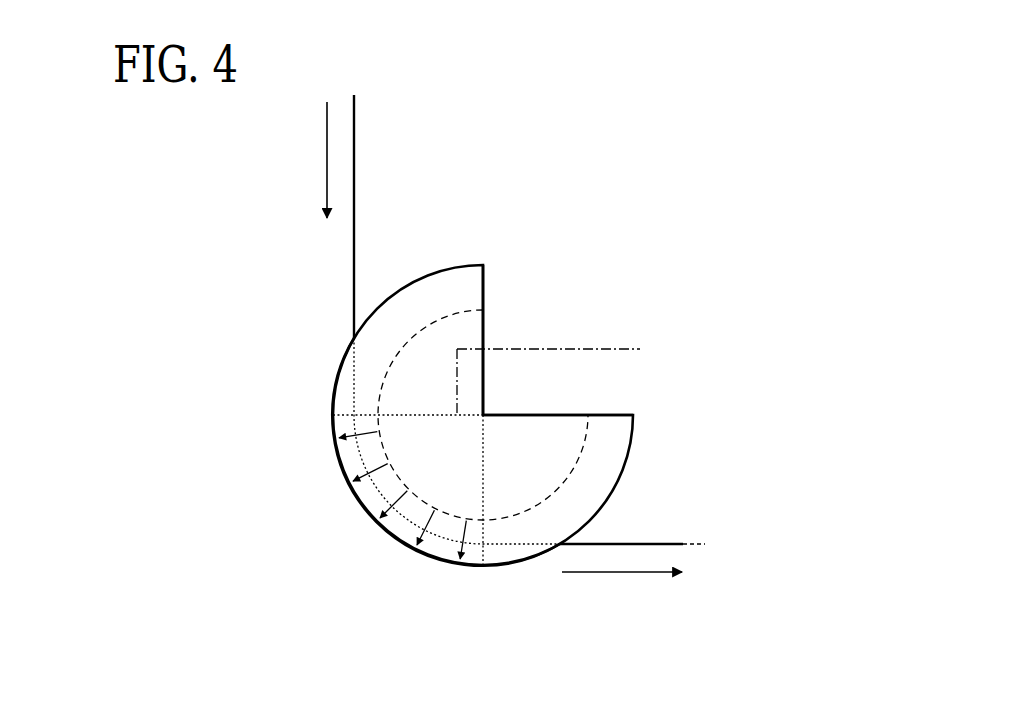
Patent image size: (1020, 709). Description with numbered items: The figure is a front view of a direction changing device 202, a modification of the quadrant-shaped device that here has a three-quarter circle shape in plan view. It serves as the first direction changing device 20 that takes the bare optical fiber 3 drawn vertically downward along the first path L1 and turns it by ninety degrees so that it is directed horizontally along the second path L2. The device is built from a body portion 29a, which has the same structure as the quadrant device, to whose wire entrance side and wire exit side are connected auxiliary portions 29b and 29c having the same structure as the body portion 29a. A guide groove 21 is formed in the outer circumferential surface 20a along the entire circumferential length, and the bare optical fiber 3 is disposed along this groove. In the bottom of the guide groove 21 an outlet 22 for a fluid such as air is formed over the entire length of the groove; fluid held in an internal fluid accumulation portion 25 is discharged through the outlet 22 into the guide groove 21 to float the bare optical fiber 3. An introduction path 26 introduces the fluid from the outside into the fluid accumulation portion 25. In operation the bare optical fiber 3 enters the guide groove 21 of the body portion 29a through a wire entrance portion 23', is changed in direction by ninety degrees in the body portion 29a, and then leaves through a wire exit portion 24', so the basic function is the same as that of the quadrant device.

The bare optical fiber 3 is at (355, 132).
The first path L1 is at (355, 192).
The second path L2 is at (683, 544).
The direction changing device 202 is at (468, 265).
The first direction changing device 20 is at (483, 373).
The introduction path 26 is at (595, 349).
The fluid accumulation portion 25 is at (448, 453).
The auxiliary portion 29b is at (473, 340).
The auxiliary portion 29c is at (558, 425).
The outer circumferential surface 20a is at (358, 494).
The body portion 29a is at (370, 498).
The guide groove 21 is at (417, 503).
The outlet 22 is at (439, 502).
The wire entrance portion 23' is at (293, 375).
The wire exit portion 24' is at (525, 604).